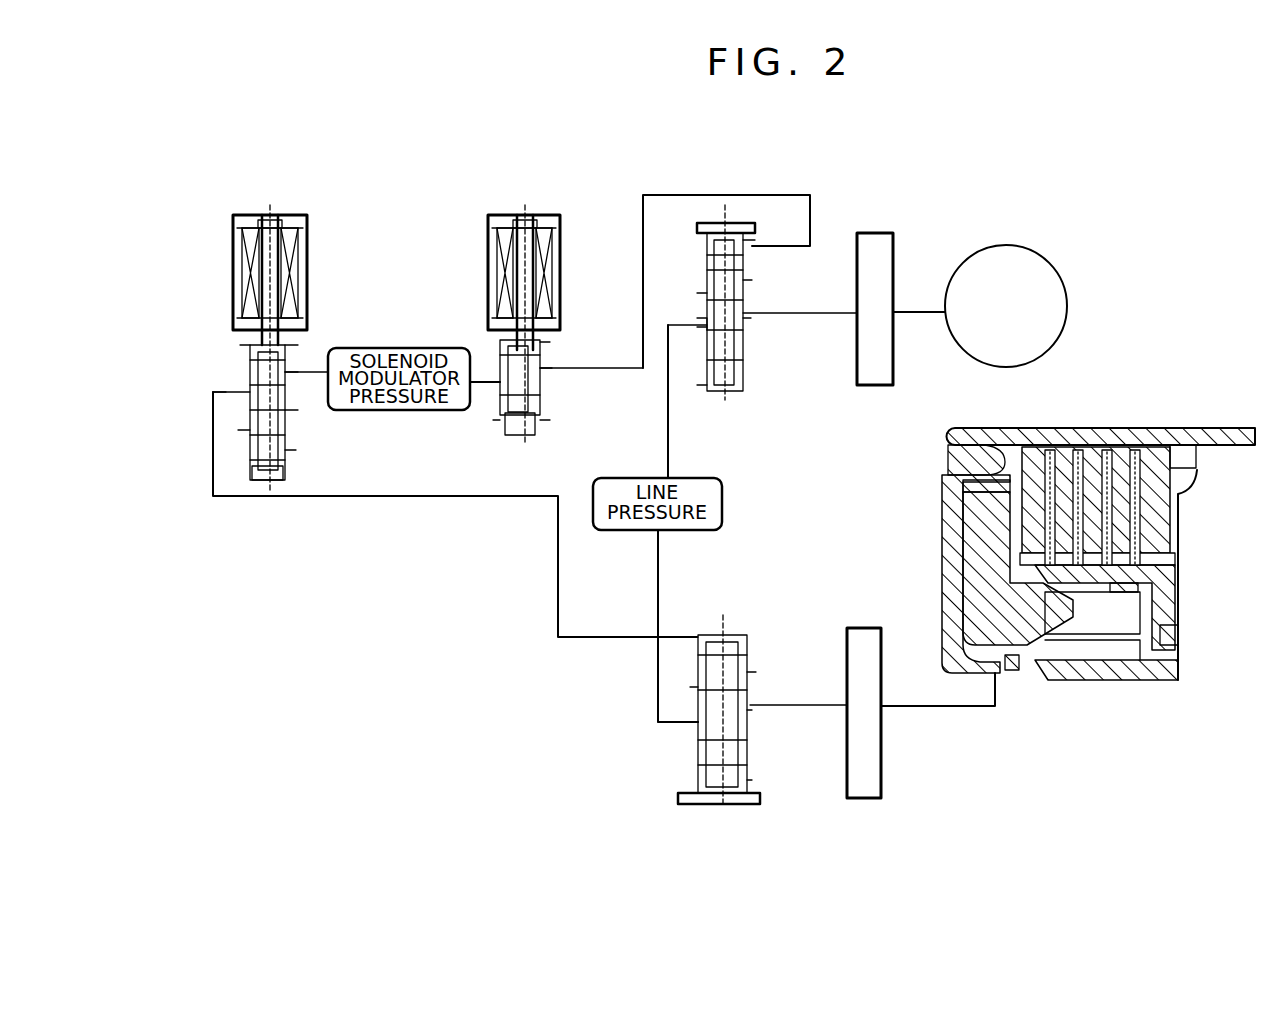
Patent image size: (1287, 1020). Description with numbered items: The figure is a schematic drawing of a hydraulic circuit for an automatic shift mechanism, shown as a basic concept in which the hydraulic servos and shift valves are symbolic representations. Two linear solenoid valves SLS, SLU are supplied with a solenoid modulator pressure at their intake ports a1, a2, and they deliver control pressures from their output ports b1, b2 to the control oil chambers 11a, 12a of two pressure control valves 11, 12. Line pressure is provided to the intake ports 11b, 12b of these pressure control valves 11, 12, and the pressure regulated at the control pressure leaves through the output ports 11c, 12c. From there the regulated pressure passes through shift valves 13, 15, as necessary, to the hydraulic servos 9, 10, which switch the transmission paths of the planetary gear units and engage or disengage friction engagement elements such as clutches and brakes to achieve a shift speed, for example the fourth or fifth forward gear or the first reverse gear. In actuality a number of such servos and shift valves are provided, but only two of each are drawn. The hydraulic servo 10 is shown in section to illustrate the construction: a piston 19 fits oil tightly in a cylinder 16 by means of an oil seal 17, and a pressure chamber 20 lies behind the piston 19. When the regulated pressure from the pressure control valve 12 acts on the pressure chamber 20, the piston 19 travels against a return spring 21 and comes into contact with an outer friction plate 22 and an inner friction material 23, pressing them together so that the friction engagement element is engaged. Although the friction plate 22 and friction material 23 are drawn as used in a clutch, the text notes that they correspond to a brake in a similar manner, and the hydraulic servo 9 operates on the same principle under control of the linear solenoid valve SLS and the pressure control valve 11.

The hydraulic servo 9 is at (1035, 250).
The hydraulic servo 10 is at (977, 427).
The pressure control valve 11 is at (713, 220).
The control oil chamber 11a is at (755, 244).
The intake port 11b is at (706, 323).
The output port 11c is at (746, 318).
The pressure control valve 12 is at (741, 627).
The control oil chamber 12a is at (709, 632).
The intake port 12b is at (697, 725).
The output port 12c is at (748, 712).
The shift valve 13 is at (882, 233).
The shift valve 15 is at (861, 628).
The cylinder 16 is at (960, 487).
The oil seal 17 is at (995, 452).
The piston 19 is at (975, 551).
The pressure chamber 20 is at (958, 607).
The return spring 21 is at (1088, 680).
The outer friction plate 22 is at (1125, 480).
The inner friction material 23 is at (1080, 490).
The linear solenoid valve SLS is at (270, 204).
The linear solenoid valve SLU is at (525, 204).
The intake port a1 is at (292, 372).
The output port b1 is at (230, 392).
The intake port a2 is at (498, 380).
The output port b2 is at (550, 368).